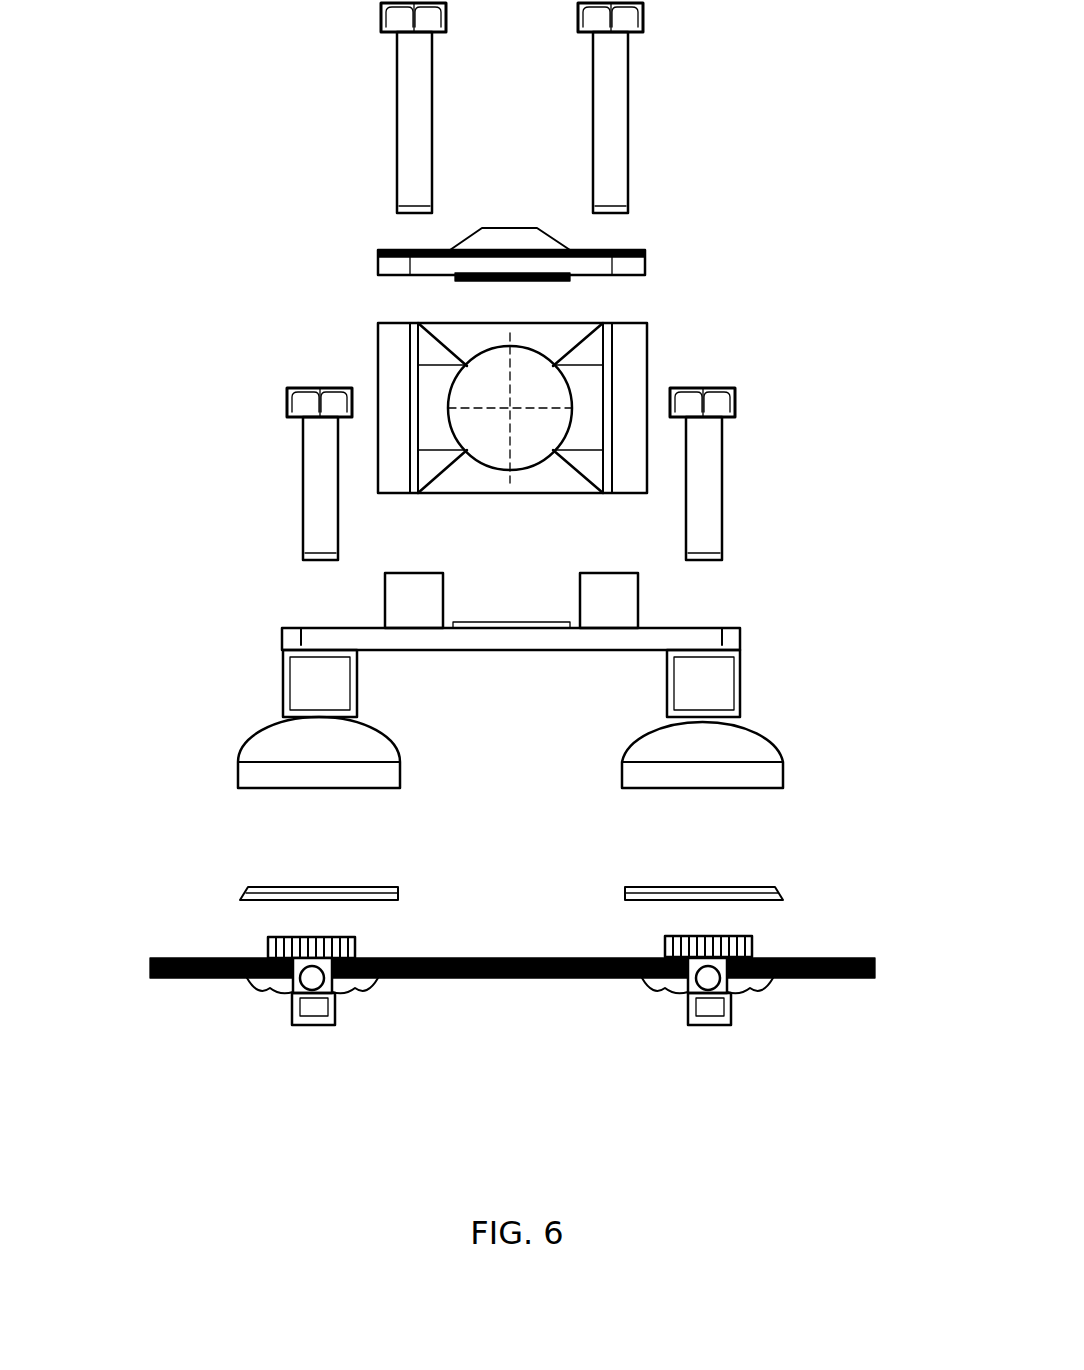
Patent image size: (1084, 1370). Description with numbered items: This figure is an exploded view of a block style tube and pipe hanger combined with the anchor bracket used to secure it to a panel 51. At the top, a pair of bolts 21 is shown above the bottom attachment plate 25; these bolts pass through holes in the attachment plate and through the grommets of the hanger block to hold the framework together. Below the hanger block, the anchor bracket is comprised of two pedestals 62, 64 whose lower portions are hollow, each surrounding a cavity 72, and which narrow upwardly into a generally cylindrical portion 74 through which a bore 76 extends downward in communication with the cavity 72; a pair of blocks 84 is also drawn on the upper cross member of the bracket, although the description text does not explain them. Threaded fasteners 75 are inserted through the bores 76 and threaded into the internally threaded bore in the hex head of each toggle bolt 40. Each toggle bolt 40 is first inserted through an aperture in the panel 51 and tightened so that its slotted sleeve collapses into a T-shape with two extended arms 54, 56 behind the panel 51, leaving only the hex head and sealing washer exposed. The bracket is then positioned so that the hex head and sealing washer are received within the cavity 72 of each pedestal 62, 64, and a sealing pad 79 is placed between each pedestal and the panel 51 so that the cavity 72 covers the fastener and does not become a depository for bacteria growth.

The bolt 21 is at (397, 132).
The bottom attachment plate 25 is at (512, 228).
The threaded fastener 75 is at (303, 468).
The spacer block 84 is at (460, 572).
The bore 76 is at (300, 628).
The cavity 72 is at (505, 650).
The cylindrical portion 74 is at (283, 680).
The pedestal 62 is at (240, 778).
The pedestal 64 is at (785, 778).
The sealing pad 79 is at (250, 887).
The panel 51 is at (150, 975).
The extended arm 54 is at (265, 992).
The extended arm 56 is at (357, 992).
The toggle bolt 40 is at (518, 1074).